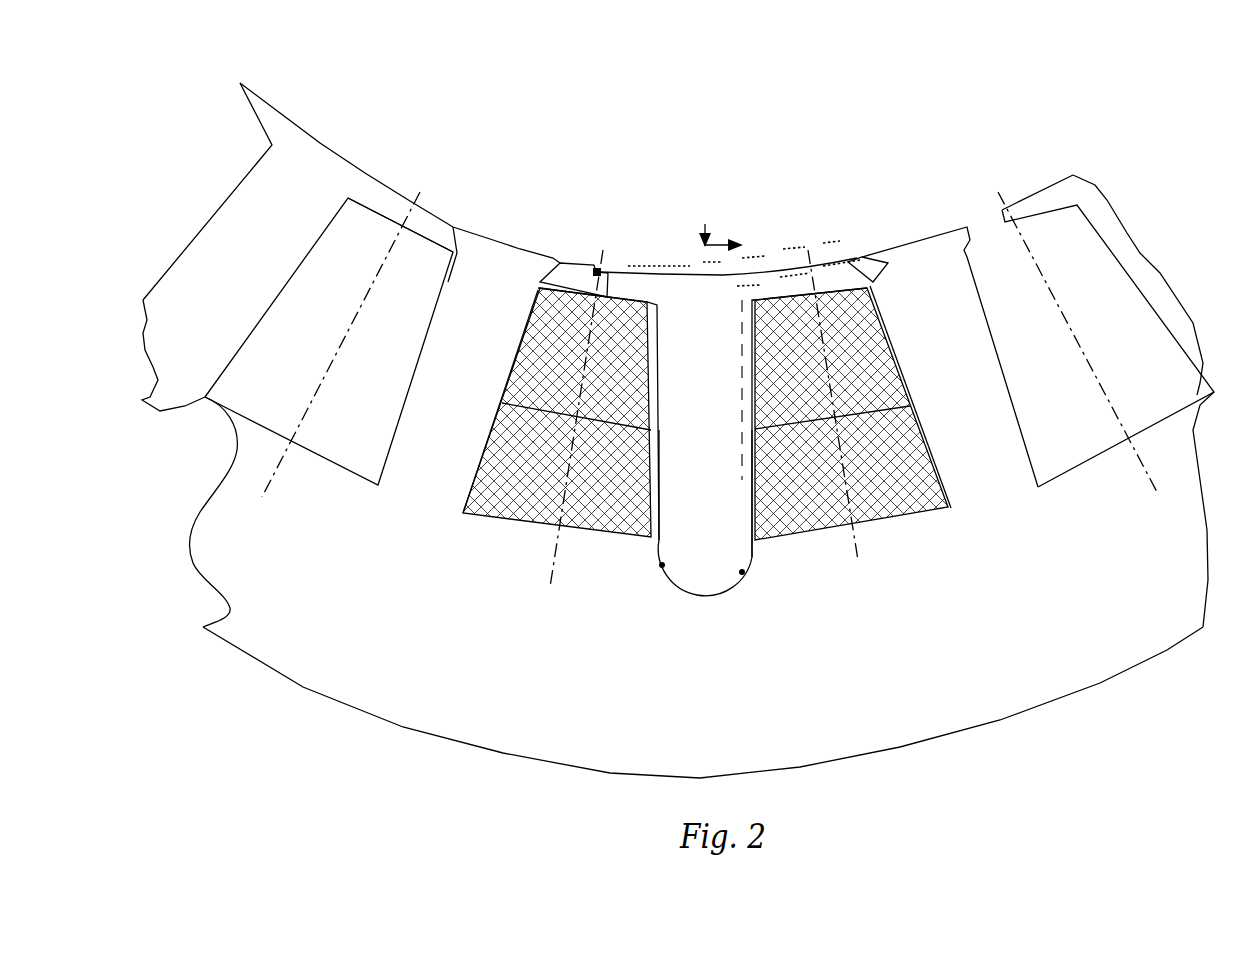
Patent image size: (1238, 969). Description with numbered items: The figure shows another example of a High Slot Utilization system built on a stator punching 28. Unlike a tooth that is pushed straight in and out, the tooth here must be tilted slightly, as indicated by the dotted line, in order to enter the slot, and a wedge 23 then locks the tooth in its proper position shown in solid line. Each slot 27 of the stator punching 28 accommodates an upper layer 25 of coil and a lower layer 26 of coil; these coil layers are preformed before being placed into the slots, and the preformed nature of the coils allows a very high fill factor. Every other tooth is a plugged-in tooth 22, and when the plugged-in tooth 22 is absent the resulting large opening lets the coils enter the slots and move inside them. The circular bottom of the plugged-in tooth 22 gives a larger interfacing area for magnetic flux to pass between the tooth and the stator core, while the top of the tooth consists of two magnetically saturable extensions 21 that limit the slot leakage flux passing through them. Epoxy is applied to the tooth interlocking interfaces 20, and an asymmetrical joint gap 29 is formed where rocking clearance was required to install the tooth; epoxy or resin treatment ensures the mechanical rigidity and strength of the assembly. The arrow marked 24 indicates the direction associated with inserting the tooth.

The tooth interlocking interfaces 20 is at (662, 563).
The magnetically saturable extensions 21 is at (432, 228).
The plugged-in tooth 22 is at (240, 284).
The wedge 23 is at (574, 268).
The insertion direction 24 is at (721, 225).
The upper layer of coil 25 is at (627, 388).
The lower layer of coil 26 is at (892, 494).
The slot 27 is at (1061, 450).
The stator punching 28 is at (1088, 614).
The asymmetrical joint gap 29 is at (742, 572).